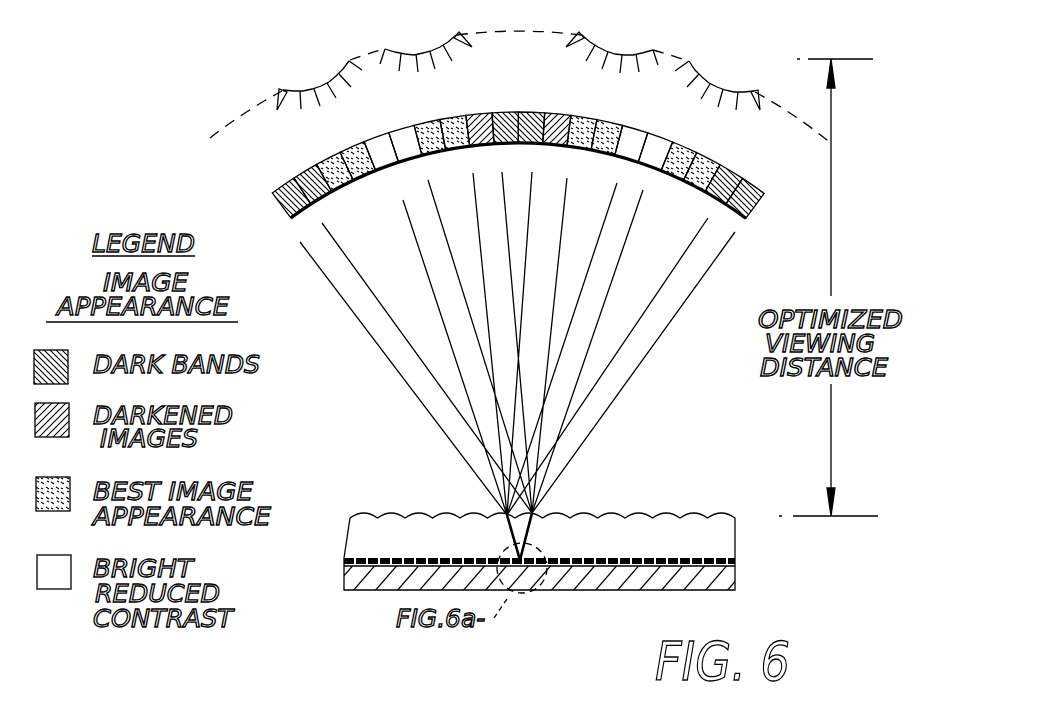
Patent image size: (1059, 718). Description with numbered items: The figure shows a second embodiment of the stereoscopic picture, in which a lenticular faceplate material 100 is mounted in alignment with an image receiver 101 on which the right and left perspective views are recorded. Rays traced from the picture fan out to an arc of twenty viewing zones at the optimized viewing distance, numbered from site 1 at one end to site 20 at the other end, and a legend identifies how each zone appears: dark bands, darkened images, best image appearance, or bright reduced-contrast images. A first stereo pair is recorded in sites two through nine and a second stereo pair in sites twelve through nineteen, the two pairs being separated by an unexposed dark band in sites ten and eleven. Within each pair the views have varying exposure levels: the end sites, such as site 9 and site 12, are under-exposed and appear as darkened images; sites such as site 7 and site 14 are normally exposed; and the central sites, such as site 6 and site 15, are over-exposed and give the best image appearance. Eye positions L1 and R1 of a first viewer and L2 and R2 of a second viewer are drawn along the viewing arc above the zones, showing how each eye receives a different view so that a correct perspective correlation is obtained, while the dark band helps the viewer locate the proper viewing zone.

The site 1 is at (755, 190).
The site 6 is at (650, 136).
The site 7 is at (622, 126).
The site 9 is at (562, 115).
The site 12 is at (473, 115).
The site 14 is at (418, 125).
The site 15 is at (384, 136).
The site 20 is at (276, 186).
The lenticular faceplate material 100 is at (586, 514).
The image receiver 101 is at (740, 571).
The left eye of first viewer L1 is at (612, 42).
The right eye of first viewer R1 is at (717, 77).
The left eye of second viewer L2 is at (319, 74).
The right eye of second viewer R2 is at (426, 39).